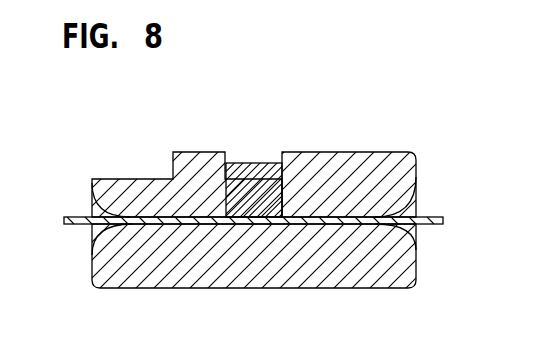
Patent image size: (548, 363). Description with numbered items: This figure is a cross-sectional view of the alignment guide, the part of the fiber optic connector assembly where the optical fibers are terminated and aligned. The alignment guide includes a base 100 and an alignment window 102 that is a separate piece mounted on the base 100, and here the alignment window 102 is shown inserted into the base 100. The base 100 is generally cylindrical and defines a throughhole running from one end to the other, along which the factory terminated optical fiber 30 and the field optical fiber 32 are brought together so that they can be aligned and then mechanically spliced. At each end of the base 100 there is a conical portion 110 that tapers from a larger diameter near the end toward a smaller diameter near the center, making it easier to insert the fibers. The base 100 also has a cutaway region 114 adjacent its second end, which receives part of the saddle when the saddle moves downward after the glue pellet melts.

The factory terminated optical fiber 30 is at (433, 219).
The field optical fiber 32 is at (74, 216).
The base 100 is at (350, 263).
The alignment window 102 is at (258, 163).
The conical portion 110 is at (408, 232).
The cutaway region 114 is at (141, 167).